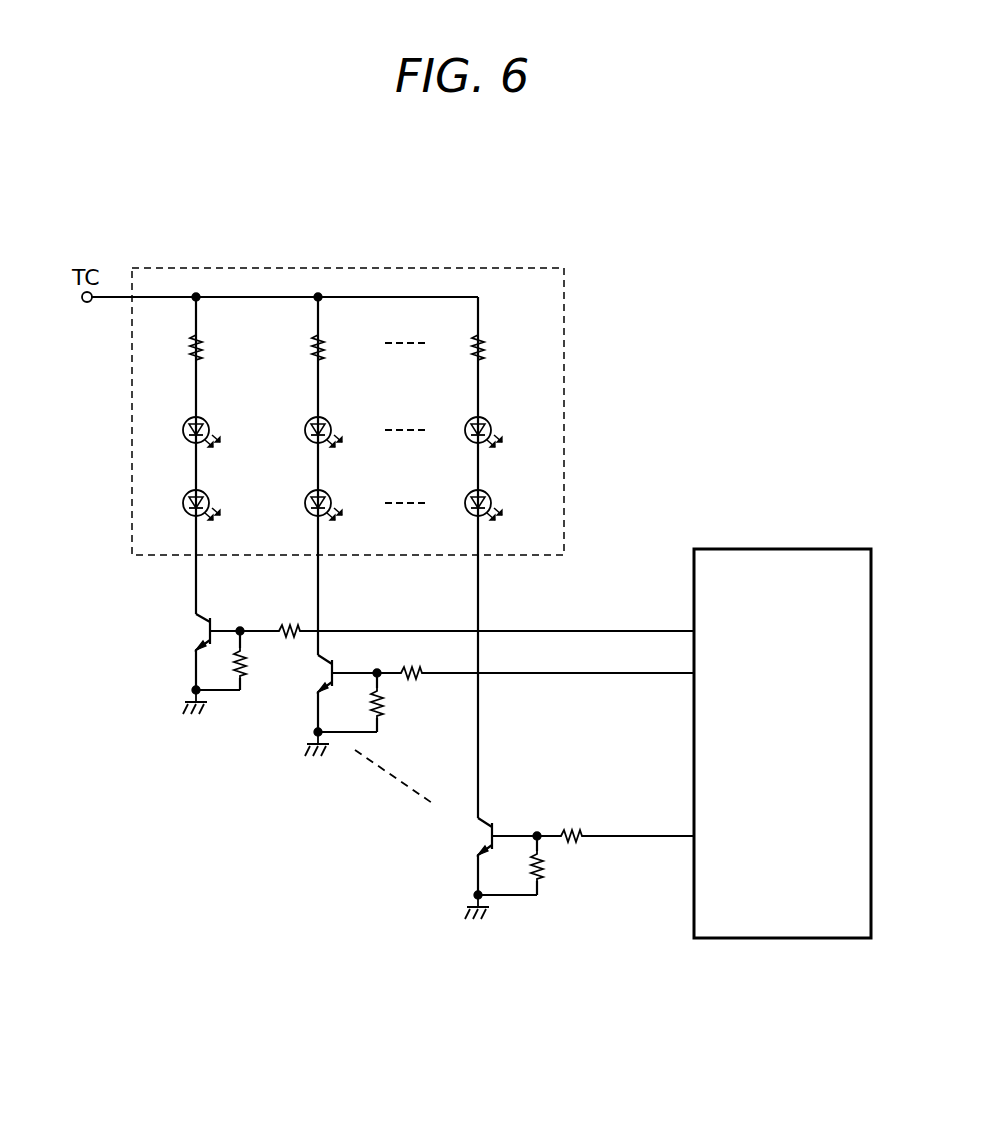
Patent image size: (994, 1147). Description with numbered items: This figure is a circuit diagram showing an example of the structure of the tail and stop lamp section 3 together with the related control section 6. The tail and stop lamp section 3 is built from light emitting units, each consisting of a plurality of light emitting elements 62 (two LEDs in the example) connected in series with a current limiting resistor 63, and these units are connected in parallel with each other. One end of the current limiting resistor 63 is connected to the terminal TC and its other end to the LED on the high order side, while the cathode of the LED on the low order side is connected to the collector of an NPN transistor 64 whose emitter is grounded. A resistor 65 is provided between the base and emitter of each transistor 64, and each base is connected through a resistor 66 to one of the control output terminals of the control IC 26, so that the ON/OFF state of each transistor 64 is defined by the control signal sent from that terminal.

The tail and stop lamp section 3 is at (506, 238).
The control section 6 is at (800, 971).
The control IC 26 is at (812, 548).
The light emitting element 62 is at (208, 426).
The current limiting resistor 63 is at (203, 340).
The NPN transistor 64 is at (195, 627).
The resistor 65 is at (246, 683).
The resistor 66 is at (291, 624).